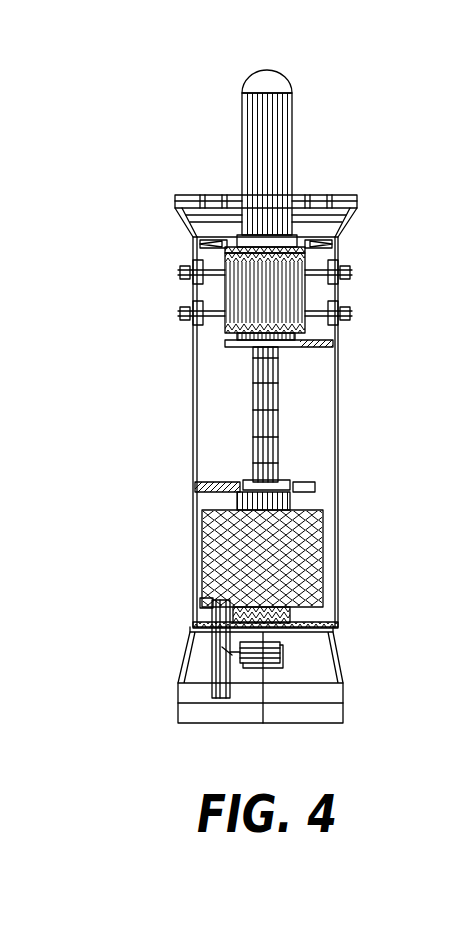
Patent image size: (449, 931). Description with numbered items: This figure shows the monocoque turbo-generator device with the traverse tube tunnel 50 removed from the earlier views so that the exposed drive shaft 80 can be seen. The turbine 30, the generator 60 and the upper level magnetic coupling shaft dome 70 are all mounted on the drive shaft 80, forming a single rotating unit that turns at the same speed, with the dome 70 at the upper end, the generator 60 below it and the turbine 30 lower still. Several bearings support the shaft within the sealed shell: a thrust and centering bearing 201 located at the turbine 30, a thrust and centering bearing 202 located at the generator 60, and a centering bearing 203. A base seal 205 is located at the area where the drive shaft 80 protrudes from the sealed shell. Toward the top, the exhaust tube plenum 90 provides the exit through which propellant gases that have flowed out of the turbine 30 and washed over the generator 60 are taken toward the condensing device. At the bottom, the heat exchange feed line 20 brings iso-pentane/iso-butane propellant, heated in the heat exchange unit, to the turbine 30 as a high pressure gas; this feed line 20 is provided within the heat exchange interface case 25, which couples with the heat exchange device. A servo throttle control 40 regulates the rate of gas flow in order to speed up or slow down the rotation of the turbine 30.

The upper level magnetic coupling shaft dome 70 is at (246, 80).
The drive shaft 80 is at (248, 150).
The exhaust tube plenum 90 is at (176, 202).
The base seal 205 is at (225, 243).
The centering bearing 203 is at (230, 250).
The generator 60 is at (307, 292).
The thrust and centering bearing 202 is at (227, 338).
The traverse tube tunnel 50 is at (194, 430).
The turbine 30 is at (333, 552).
The thrust and centering bearing 201 is at (208, 600).
The heat exchange feed line 20 is at (212, 678).
The servo throttle control 40 is at (284, 650).
The heat exchange interface case 25 is at (325, 673).